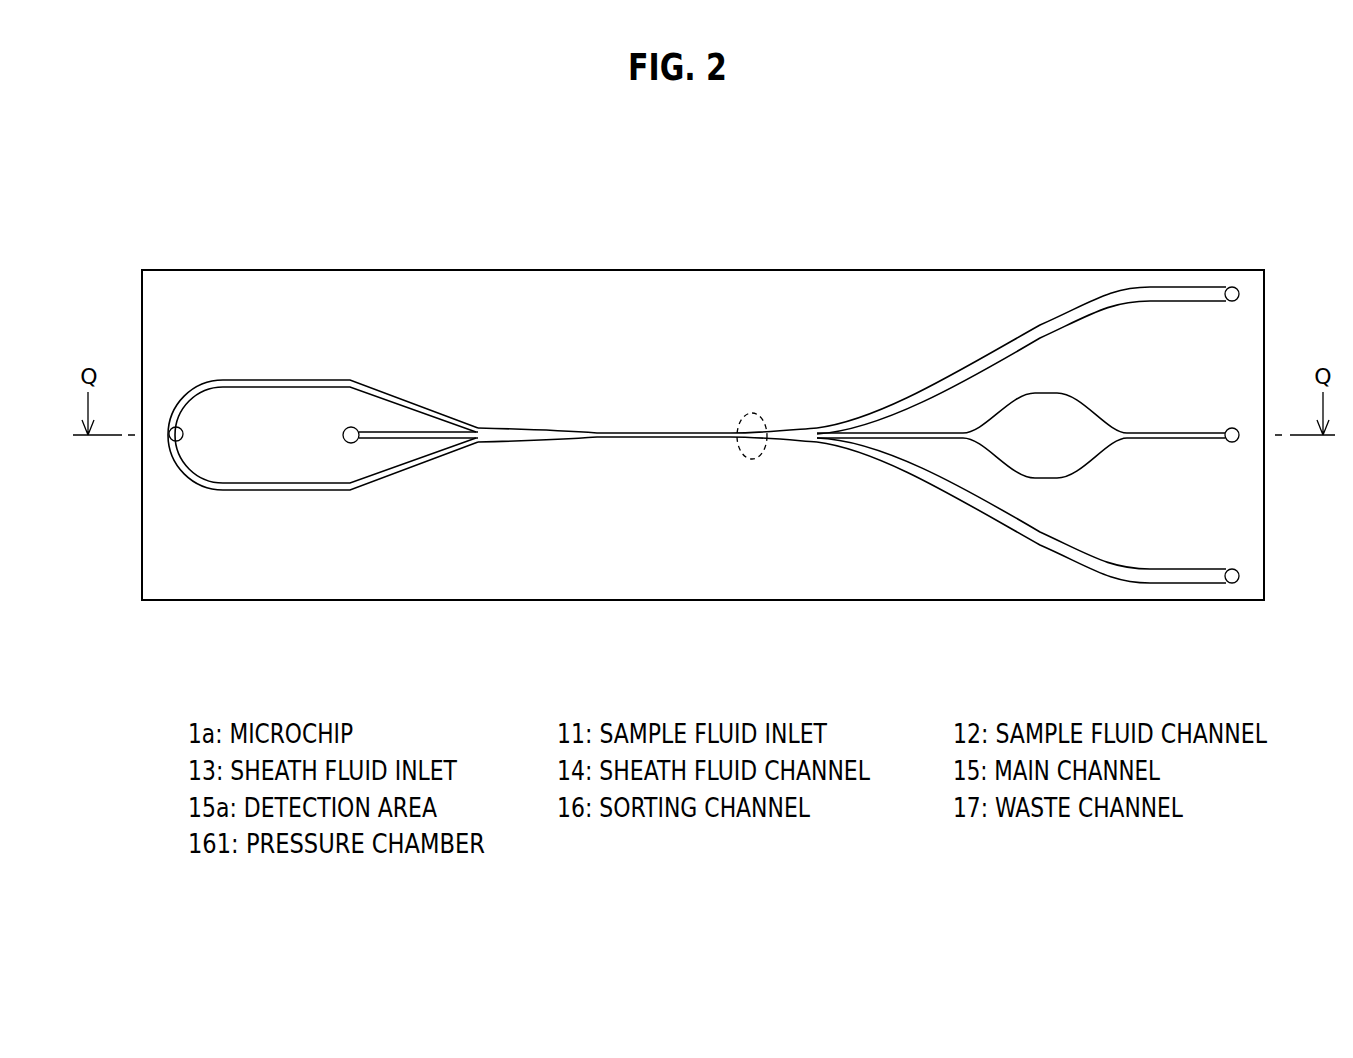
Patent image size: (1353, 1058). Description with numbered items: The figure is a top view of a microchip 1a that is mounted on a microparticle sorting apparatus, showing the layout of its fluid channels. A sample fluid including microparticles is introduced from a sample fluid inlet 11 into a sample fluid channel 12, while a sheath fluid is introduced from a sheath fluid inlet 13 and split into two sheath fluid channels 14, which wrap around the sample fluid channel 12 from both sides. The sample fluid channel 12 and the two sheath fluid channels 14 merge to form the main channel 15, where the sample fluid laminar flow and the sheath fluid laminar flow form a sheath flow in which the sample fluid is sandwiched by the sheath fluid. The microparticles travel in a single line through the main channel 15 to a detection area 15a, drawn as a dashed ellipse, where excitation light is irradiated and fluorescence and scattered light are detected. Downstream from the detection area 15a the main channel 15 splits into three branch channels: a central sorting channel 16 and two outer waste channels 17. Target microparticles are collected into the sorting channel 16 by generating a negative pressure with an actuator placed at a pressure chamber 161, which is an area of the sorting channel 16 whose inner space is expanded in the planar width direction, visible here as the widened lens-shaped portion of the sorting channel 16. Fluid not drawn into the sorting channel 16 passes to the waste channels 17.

The microchip 1a is at (1263, 264).
The sample fluid inlet 11 is at (352, 443).
The sample fluid channel 12 is at (403, 432).
The sheath fluid inlet 13 is at (175, 441).
The sheath fluid channel 14 is at (272, 380).
The main channel 15 is at (530, 432).
The detection area 15a is at (752, 413).
The sorting channel 16 is at (900, 440).
The pressure chamber 161 is at (1025, 453).
The waste channel 17 is at (1127, 295).